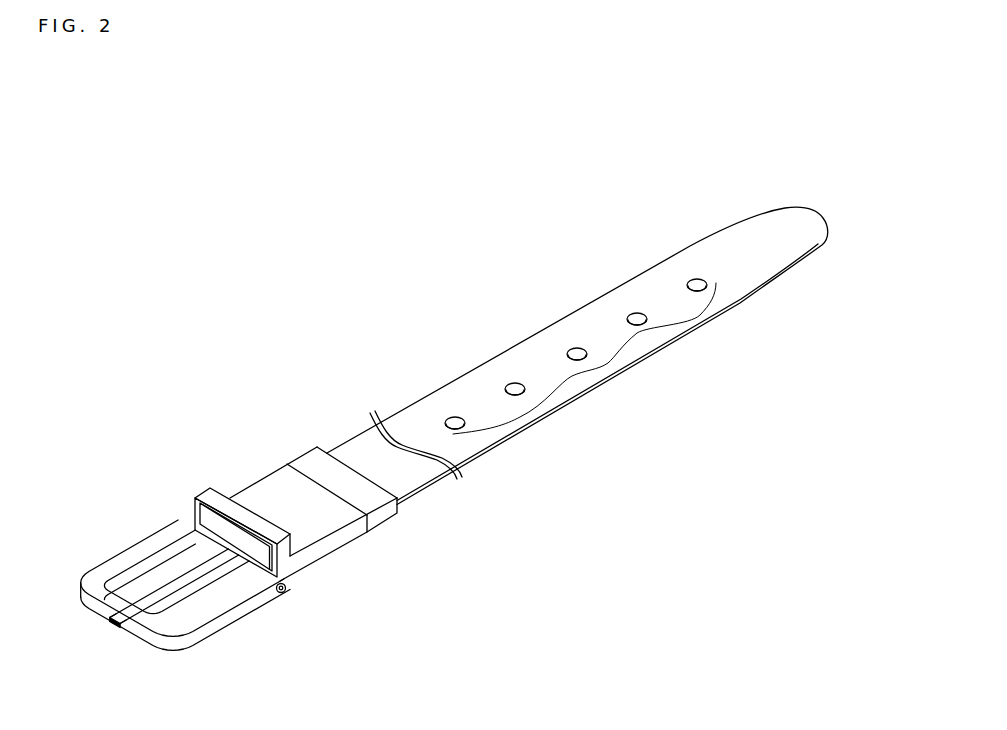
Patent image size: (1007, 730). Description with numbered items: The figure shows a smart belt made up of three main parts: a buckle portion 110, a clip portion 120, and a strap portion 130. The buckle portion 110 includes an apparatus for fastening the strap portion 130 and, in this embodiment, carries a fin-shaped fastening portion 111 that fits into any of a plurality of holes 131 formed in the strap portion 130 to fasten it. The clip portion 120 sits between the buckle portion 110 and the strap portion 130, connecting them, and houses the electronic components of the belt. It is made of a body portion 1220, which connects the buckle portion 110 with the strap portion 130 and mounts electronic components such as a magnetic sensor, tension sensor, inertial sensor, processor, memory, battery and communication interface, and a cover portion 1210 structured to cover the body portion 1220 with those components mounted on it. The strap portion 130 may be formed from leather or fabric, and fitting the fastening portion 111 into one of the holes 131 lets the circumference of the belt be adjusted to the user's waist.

The buckle portion 110 is at (130, 553).
The fastening portion 111 is at (183, 580).
The clip portion 120 is at (353, 548).
The cover portion 1210 is at (313, 528).
The body portion 1220 is at (372, 500).
The strap portion 130 is at (569, 355).
The holes 131 is at (608, 363).